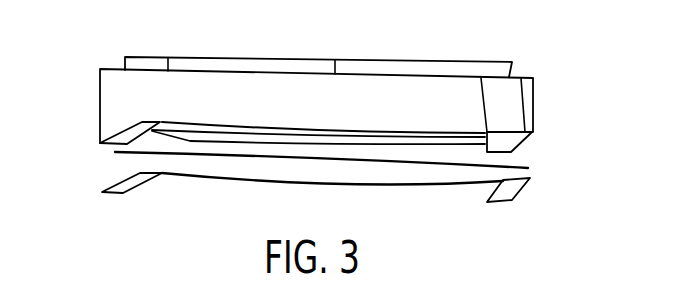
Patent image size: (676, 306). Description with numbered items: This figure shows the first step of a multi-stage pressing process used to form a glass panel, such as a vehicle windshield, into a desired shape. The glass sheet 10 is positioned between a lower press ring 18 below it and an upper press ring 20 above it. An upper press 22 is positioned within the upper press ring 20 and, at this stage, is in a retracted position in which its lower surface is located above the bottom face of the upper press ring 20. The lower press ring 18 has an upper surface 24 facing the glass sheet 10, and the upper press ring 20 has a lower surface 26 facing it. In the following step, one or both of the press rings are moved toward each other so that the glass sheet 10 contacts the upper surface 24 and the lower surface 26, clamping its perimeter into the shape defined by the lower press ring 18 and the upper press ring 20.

The glass sheet 10 is at (528, 167).
The lower press ring 18 is at (522, 190).
The upper press ring 20 is at (535, 100).
The upper press 22 is at (400, 62).
The upper surface of the lower press ring 24 is at (120, 184).
The lower surface of the upper press ring 26 is at (100, 143).